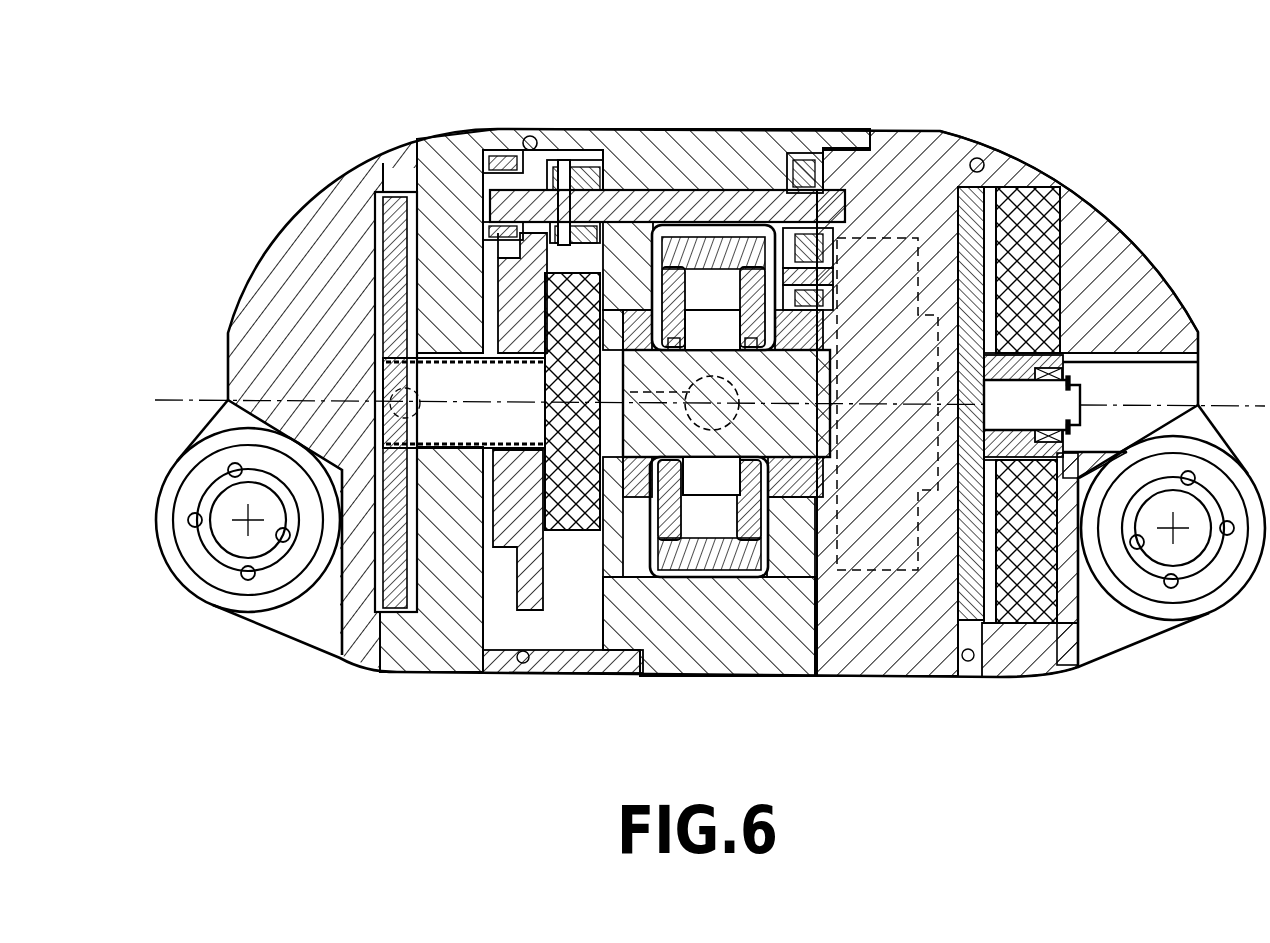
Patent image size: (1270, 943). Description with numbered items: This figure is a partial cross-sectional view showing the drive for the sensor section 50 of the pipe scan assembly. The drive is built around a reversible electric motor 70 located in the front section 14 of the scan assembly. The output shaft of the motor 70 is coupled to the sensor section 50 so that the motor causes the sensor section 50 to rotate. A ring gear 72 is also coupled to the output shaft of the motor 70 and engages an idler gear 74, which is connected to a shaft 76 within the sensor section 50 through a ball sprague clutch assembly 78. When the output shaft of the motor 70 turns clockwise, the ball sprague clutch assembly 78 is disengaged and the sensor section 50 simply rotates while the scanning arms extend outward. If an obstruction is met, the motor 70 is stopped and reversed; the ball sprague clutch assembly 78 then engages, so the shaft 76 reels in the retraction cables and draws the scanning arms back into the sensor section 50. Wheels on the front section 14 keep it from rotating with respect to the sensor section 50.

The front section 14 is at (318, 195).
The reversible electric motor 70 is at (437, 120).
The idler gear 74 is at (503, 132).
The ball sprague clutch assembly 78 is at (637, 131).
The shaft 76 is at (747, 131).
The sensor section 50 is at (897, 158).
The ring gear 72 is at (533, 608).